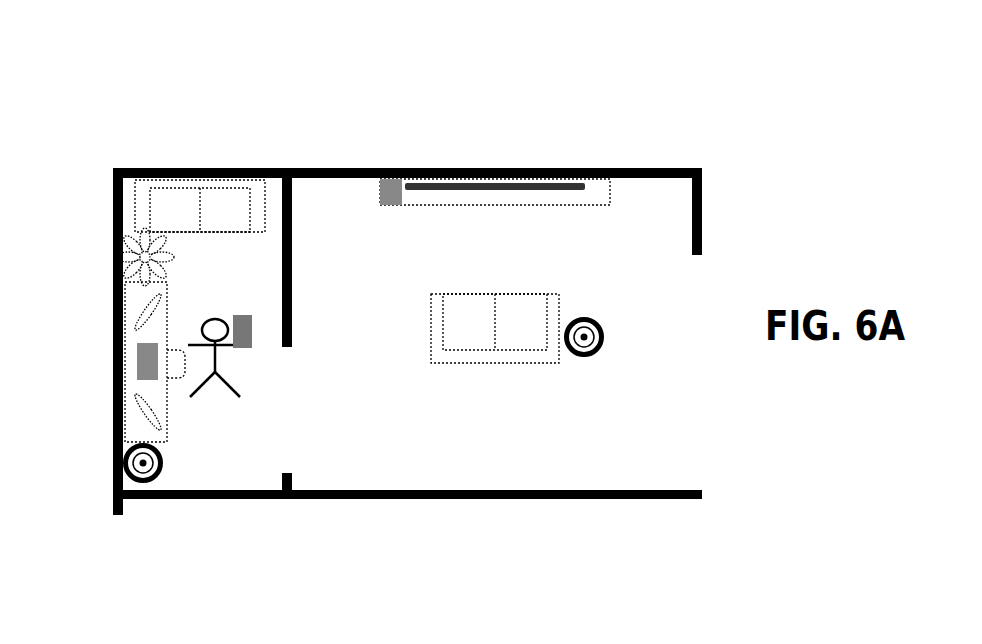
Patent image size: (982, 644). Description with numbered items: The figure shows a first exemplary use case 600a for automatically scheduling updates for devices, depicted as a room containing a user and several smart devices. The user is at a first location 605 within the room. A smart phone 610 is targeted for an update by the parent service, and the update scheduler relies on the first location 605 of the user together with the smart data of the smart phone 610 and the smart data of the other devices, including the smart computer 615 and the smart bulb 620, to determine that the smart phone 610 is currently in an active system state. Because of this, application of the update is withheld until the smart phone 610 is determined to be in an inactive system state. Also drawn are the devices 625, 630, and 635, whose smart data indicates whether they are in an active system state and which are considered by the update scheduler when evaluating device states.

The first exemplary use case 600a is at (133, 118).
The first location 605 is at (188, 383).
The smart phone 610 is at (245, 318).
The smart computer 615 is at (135, 352).
The smart bulb 620 is at (157, 475).
The device 625 is at (573, 357).
The device 630 is at (492, 195).
The device 635 is at (384, 183).